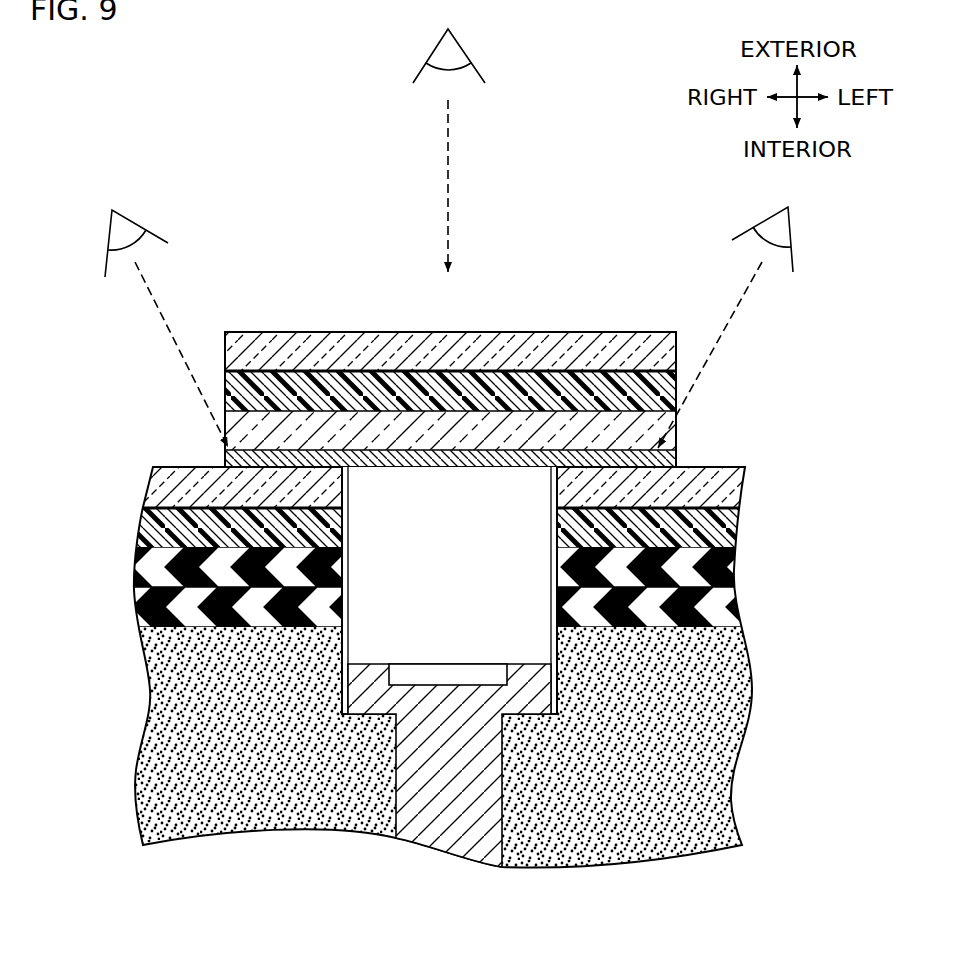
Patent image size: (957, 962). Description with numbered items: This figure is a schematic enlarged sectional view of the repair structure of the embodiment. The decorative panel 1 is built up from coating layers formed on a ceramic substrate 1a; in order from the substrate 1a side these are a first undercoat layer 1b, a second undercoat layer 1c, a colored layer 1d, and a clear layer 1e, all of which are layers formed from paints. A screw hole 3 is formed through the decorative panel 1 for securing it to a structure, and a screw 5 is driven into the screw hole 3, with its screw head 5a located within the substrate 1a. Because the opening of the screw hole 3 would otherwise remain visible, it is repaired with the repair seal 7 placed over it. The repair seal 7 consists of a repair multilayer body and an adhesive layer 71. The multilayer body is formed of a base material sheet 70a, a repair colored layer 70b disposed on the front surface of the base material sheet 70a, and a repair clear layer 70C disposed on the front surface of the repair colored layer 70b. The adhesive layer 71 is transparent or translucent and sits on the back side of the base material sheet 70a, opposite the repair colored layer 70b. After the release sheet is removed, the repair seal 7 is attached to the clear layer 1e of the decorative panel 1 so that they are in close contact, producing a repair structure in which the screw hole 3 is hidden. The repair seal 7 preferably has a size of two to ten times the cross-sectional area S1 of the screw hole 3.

The decorative panel 1 is at (182, 458).
The ceramic substrate 1a is at (713, 760).
The first undercoat layer 1b is at (710, 610).
The second undercoat layer 1c is at (720, 572).
The colored layer 1d is at (150, 530).
The clear layer 1e is at (155, 491).
The screw hole 3 is at (551, 640).
The screw 5 is at (443, 825).
The screw head 5a is at (371, 685).
The repair seal 7 is at (252, 326).
The base material sheet 70a is at (643, 430).
The repair colored layer 70b is at (570, 385).
The repair clear layer 70C is at (366, 360).
The adhesive layer 71 is at (668, 455).
The cross-sectional area of the screw hole S1 is at (553, 470).